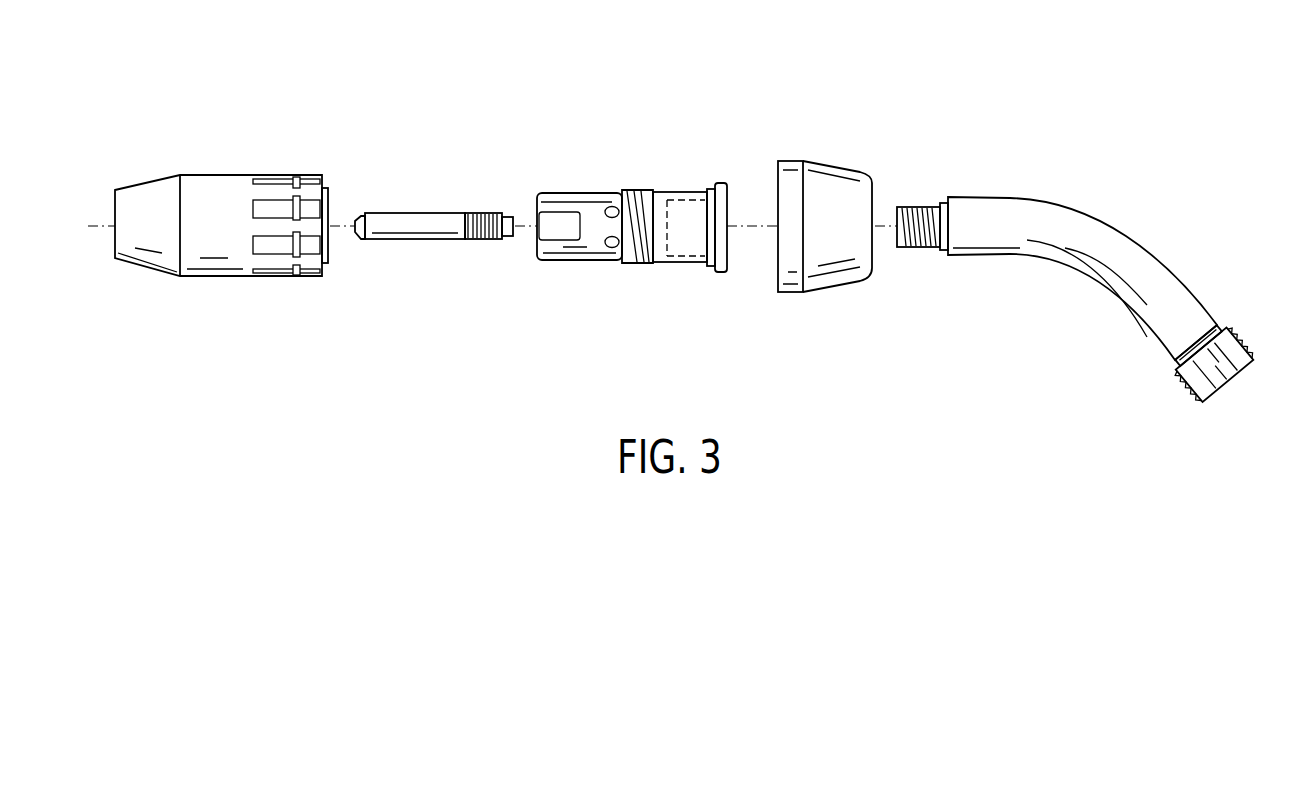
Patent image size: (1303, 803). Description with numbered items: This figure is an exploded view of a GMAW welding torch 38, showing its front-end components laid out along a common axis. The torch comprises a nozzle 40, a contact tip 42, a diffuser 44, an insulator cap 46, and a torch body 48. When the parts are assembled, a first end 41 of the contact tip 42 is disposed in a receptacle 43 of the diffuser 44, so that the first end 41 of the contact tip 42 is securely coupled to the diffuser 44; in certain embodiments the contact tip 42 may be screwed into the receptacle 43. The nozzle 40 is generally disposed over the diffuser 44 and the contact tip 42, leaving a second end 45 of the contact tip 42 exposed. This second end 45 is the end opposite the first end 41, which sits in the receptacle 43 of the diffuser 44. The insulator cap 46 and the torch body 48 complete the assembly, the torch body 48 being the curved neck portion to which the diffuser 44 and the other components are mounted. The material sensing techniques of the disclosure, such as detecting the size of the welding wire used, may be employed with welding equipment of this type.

The GMAW welding torch 38 is at (985, 92).
The nozzle 40 is at (215, 173).
The first end 41 is at (495, 268).
The contact tip 42 is at (433, 212).
The receptacle 43 is at (540, 222).
The diffuser 44 is at (607, 192).
The second end 45 is at (352, 285).
The insulator cap 46 is at (833, 165).
The torch body 48 is at (1015, 197).